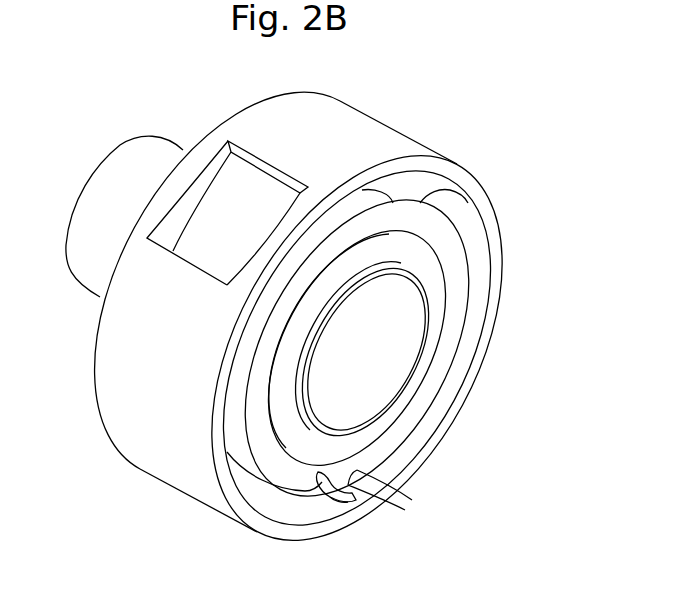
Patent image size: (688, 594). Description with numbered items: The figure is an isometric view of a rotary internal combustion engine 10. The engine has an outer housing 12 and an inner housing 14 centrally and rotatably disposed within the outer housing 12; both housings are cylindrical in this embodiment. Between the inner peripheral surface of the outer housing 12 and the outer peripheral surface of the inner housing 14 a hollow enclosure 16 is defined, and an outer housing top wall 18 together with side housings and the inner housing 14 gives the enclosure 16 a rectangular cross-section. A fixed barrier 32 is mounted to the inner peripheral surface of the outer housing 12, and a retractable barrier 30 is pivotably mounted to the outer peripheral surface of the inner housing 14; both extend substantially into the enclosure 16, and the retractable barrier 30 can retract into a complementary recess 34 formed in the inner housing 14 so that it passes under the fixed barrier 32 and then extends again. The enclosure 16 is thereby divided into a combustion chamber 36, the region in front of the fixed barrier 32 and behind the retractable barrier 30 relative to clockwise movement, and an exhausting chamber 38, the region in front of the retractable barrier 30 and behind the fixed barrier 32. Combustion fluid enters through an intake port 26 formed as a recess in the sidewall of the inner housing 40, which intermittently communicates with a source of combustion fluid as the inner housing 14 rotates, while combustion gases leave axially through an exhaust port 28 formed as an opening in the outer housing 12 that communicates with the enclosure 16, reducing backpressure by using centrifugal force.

The rotary internal combustion engine 10 is at (195, 566).
The outer housing 12 is at (404, 117).
The inner housing 14 is at (263, 433).
The hollow enclosure 16 is at (432, 415).
The outer housing top wall 18 is at (337, 123).
The intake port 26 is at (362, 502).
The exhaust port 28 is at (226, 169).
The retractable barrier 30 is at (343, 500).
The fixed barrier 32 is at (421, 189).
The recess 34 is at (412, 500).
The combustion chamber 36 is at (407, 445).
The exhausting chamber 38 is at (267, 497).
The sidewall of the inner housing 40 is at (458, 273).